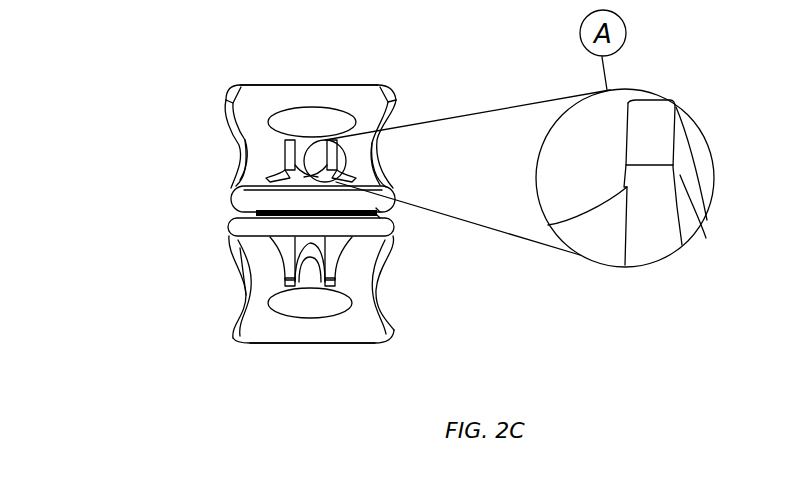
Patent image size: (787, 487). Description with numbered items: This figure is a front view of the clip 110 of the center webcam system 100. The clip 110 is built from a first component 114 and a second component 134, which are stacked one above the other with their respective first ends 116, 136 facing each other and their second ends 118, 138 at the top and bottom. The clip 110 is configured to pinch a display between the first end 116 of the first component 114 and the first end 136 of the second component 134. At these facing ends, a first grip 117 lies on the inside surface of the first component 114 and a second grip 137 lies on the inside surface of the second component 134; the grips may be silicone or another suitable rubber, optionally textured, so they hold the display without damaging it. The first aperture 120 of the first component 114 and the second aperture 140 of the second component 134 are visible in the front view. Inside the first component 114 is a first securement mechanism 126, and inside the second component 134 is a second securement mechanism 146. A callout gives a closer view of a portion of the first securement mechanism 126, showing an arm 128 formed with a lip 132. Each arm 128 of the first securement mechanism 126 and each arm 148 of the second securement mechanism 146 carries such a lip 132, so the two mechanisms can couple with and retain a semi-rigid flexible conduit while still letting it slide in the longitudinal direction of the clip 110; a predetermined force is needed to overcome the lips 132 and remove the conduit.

The center webcam system 100 is at (127, 100).
The clip 110 is at (110, 170).
The first component 114 is at (243, 88).
The first end of the first component 116 is at (240, 212).
The first grip 117 is at (378, 210).
The second end of the first component 118 is at (273, 82).
The first aperture 120 is at (343, 131).
The first securement mechanism 126 is at (270, 178).
The arm 128 is at (680, 180).
The lip 132 is at (623, 183).
The second component 134 is at (247, 340).
The first end of the second component 136 is at (252, 216).
The second grip 137 is at (380, 218).
The second end of the second component 138 is at (273, 342).
The second aperture 140 is at (343, 312).
The second securement mechanism 146 is at (275, 238).
The arm 148 is at (392, 306).